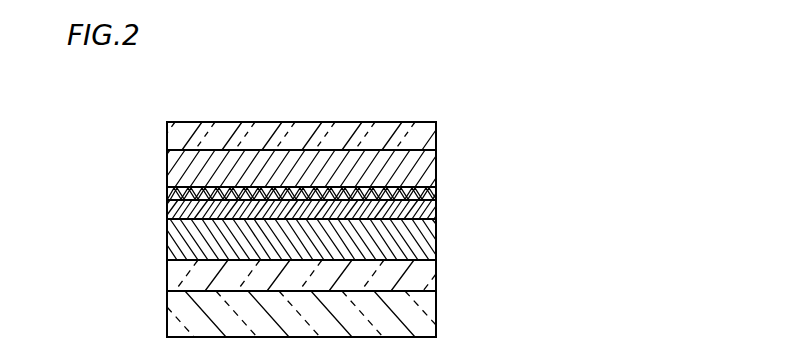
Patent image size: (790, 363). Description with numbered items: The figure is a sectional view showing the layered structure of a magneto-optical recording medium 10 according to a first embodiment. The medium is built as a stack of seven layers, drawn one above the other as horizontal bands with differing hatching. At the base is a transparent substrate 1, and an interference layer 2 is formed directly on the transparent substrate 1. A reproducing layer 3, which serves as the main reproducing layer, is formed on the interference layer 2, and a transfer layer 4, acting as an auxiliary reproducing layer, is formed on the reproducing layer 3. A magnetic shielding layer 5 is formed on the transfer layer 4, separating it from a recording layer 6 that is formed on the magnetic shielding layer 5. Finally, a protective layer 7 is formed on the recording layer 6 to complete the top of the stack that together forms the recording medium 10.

The magneto-optical recording medium 10 is at (428, 103).
The transparent substrate 1 is at (430, 311).
The interference layer 2 is at (430, 277).
The reproducing layer 3 is at (430, 240).
The transfer layer 4 is at (428, 213).
The magnetic shielding layer 5 is at (430, 193).
The recording layer 6 is at (429, 166).
The protective layer 7 is at (431, 138).